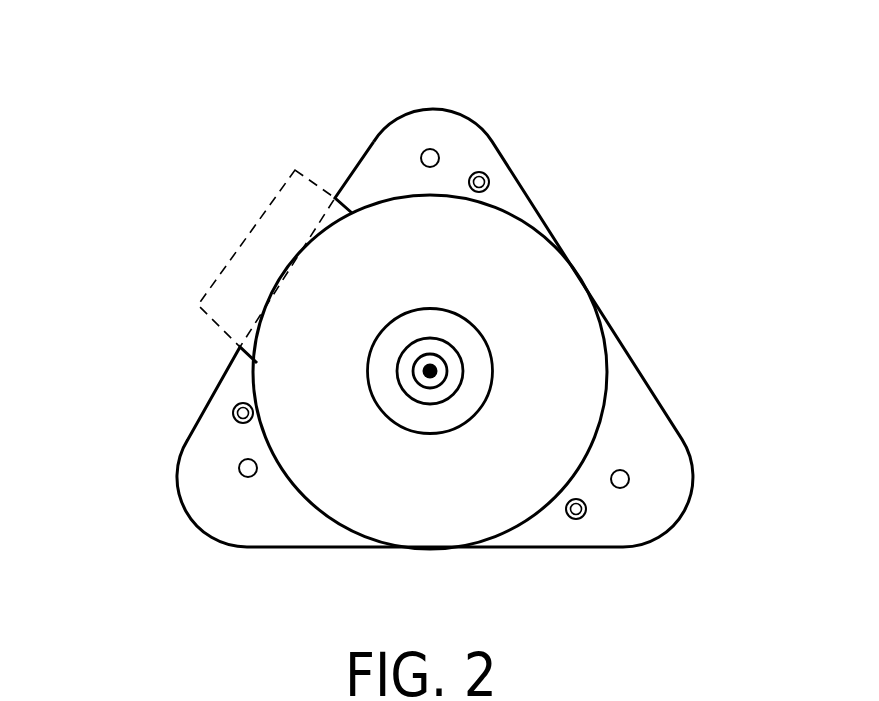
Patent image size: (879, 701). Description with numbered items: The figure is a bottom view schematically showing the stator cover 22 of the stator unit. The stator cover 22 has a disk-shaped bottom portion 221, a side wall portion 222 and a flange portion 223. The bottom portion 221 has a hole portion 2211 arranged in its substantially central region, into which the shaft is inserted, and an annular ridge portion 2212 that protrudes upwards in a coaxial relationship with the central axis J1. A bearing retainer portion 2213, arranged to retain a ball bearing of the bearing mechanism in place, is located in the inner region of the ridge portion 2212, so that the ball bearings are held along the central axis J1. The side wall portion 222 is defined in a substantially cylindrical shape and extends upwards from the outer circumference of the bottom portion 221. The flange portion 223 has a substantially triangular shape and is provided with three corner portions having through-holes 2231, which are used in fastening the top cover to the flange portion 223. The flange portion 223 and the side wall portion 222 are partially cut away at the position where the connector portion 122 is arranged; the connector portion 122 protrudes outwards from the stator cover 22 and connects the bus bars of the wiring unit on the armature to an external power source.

The stator cover 22 is at (207, 115).
The connector portion 122 is at (243, 242).
The bottom portion 221 is at (522, 273).
The side wall portion 222 is at (416, 311).
The flange portion 223 is at (482, 143).
The through-holes 2231 is at (479, 171).
The hole portion 2211 is at (437, 380).
The annular ridge portion 2212 is at (383, 372).
The bearing retainer portion 2213 is at (413, 388).
The central axis J1 is at (431, 371).